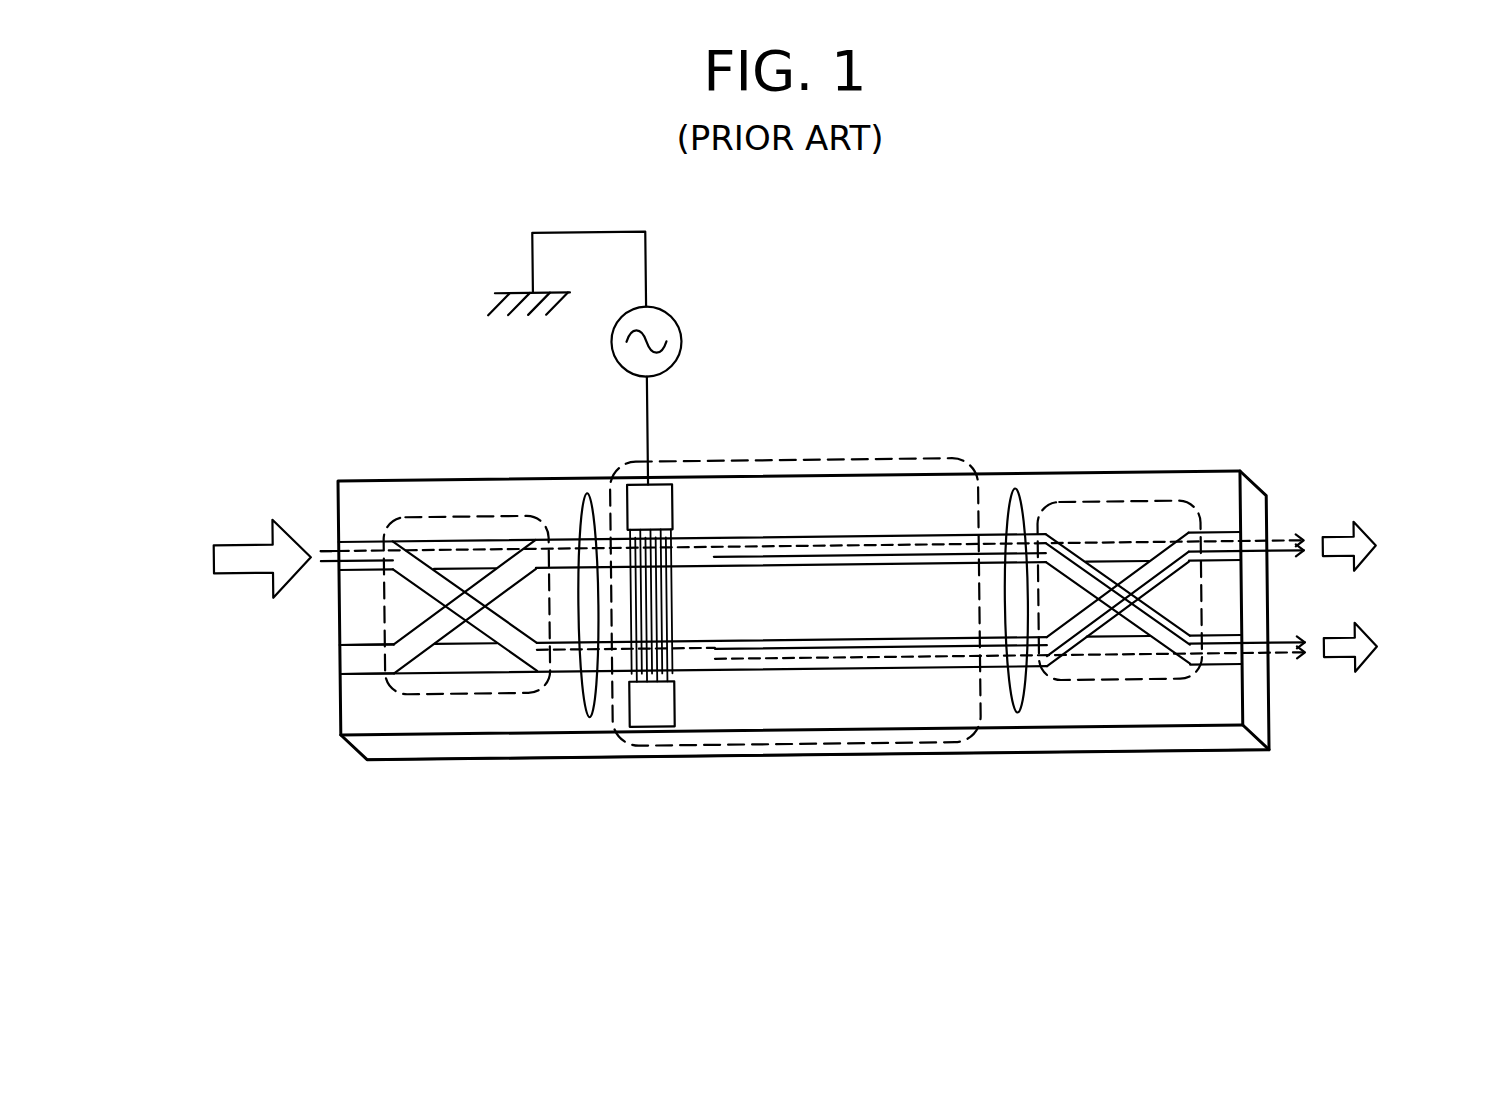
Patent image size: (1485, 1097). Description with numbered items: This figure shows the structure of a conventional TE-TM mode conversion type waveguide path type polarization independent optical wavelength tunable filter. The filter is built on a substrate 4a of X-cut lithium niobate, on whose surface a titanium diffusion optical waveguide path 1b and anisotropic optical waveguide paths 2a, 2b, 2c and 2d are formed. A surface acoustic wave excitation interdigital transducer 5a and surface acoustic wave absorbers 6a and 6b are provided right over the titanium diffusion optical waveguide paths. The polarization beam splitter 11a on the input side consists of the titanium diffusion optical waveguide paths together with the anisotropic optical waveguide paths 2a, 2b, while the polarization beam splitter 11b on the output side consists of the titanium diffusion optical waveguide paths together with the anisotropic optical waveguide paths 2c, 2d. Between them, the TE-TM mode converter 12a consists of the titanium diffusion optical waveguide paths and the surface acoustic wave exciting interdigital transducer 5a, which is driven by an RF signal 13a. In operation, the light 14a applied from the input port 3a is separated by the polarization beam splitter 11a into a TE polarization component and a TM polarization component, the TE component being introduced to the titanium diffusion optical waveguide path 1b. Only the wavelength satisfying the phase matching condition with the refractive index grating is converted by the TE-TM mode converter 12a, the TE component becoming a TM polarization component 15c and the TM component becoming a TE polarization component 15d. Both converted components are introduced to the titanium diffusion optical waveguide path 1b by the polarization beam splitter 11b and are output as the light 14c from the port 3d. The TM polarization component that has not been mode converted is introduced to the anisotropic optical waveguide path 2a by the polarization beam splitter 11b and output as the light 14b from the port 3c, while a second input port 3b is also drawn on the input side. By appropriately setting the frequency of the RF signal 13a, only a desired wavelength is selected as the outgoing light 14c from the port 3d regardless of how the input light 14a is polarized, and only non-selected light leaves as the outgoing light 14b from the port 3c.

The Ti diffusion optical waveguide path 1b is at (363, 676).
The anisotropic optical waveguide path 2a is at (433, 543).
The anisotropic optical waveguide path 2b is at (463, 674).
The anisotropic optical waveguide path 2c is at (1097, 543).
The anisotropic optical waveguide path 2d is at (1145, 674).
The input port 3a is at (338, 549).
The second input port 3b is at (338, 662).
The port 3c is at (1240, 547).
The port 3d is at (1240, 667).
The substrate 4a is at (597, 760).
The surface acoustic wave excitation interdigital transducer 5a is at (672, 509).
The surface acoustic wave absorber 6a is at (577, 516).
The surface acoustic wave absorber 6b is at (1021, 513).
The polarization beam splitter 11a is at (467, 519).
The polarization beam splitter 11b is at (1155, 519).
The TE-TM mode converter 12a is at (882, 465).
The RF signal 13a is at (677, 322).
The light 14a is at (233, 543).
The light 14b is at (1368, 544).
The light 14c is at (1365, 671).
The TM polarization component 15c is at (930, 561).
The TE polarization component 15d is at (915, 663).